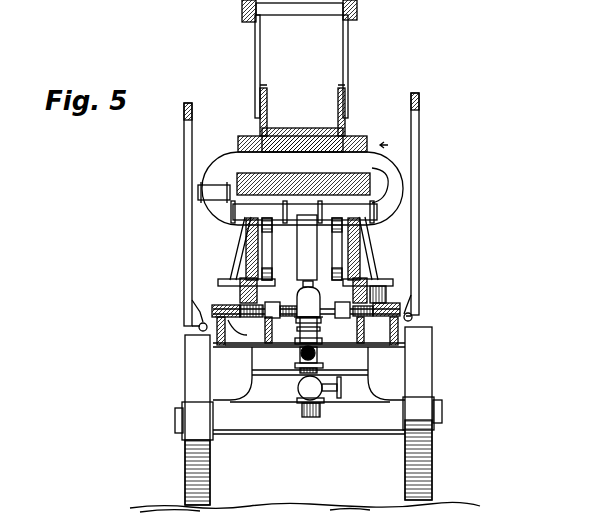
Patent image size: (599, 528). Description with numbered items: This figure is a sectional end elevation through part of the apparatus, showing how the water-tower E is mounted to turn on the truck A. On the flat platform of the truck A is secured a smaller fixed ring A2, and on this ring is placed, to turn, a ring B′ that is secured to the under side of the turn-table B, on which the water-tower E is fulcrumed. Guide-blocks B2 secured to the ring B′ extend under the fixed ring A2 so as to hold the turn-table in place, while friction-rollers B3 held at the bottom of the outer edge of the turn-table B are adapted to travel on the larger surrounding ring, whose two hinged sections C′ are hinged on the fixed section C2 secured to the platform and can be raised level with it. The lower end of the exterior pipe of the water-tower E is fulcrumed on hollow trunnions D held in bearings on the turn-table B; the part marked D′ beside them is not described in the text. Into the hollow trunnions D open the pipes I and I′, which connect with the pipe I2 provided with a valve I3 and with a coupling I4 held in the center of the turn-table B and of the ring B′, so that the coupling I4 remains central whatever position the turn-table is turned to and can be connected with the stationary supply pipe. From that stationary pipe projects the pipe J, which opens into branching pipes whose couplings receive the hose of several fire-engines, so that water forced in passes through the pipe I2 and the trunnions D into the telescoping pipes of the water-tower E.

The truck A is at (420, 360).
The smaller ring A2 is at (258, 322).
The turn-table B is at (226, 280).
The ring B′ is at (212, 309).
The guide-blocks B2 is at (283, 300).
The friction-rollers B3 is at (342, 300).
The hinged sections C′ is at (186, 257).
The fixed section C2 is at (250, 68).
The trunnions D is at (236, 150).
The housing end D′ is at (367, 140).
The water-tower E is at (313, 134).
The pipe I is at (246, 166).
The pipe I′ is at (372, 176).
The pipe I2 is at (299, 244).
The valve I3 is at (313, 284).
The coupling I4 is at (322, 324).
The pipe J is at (317, 353).